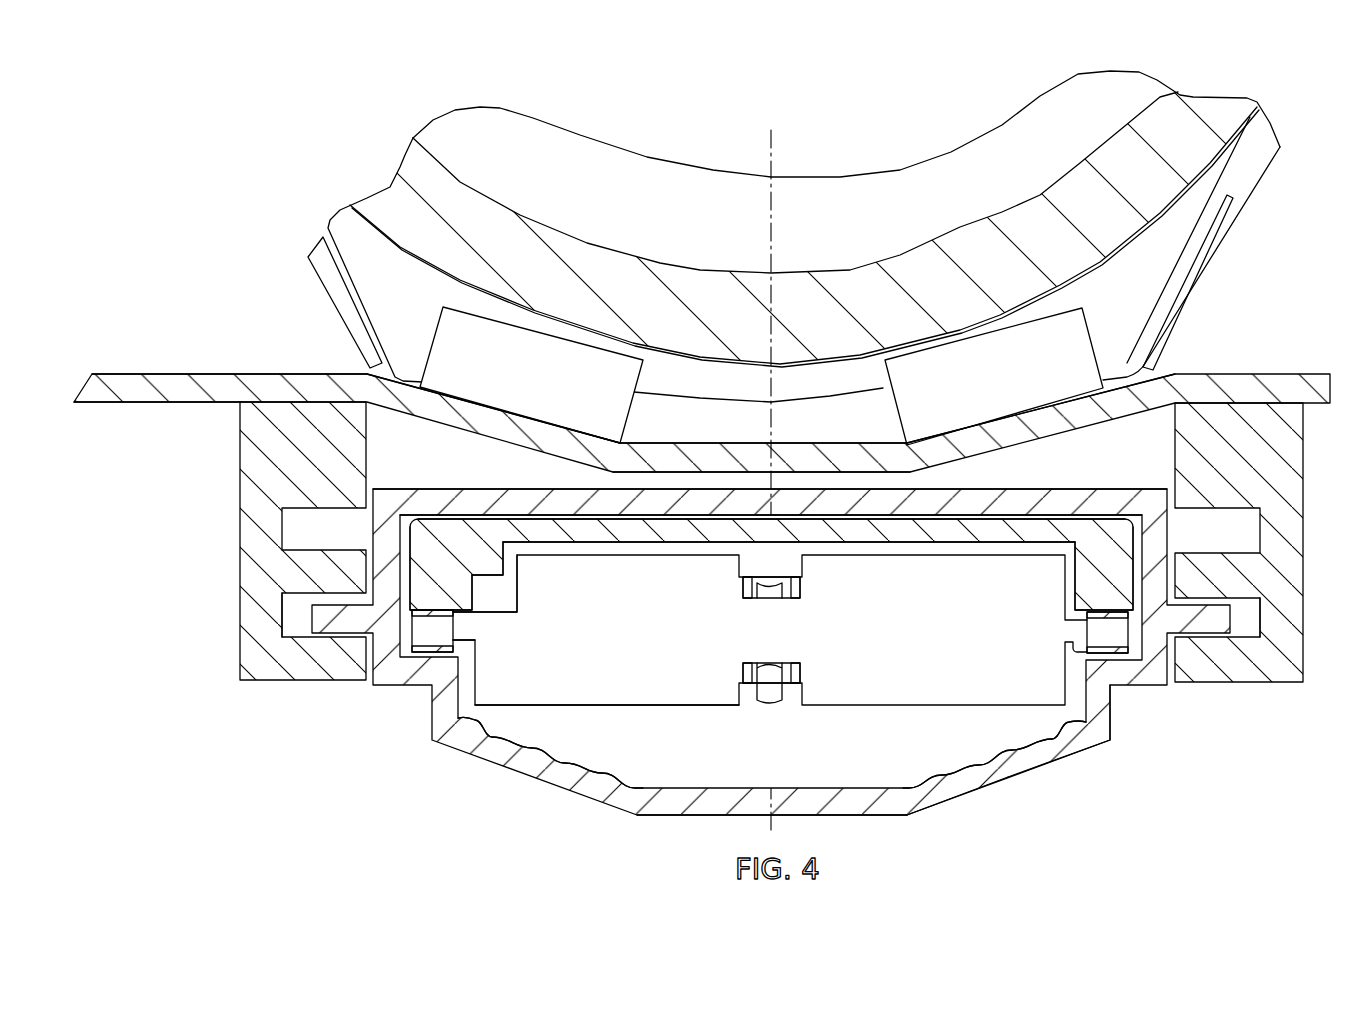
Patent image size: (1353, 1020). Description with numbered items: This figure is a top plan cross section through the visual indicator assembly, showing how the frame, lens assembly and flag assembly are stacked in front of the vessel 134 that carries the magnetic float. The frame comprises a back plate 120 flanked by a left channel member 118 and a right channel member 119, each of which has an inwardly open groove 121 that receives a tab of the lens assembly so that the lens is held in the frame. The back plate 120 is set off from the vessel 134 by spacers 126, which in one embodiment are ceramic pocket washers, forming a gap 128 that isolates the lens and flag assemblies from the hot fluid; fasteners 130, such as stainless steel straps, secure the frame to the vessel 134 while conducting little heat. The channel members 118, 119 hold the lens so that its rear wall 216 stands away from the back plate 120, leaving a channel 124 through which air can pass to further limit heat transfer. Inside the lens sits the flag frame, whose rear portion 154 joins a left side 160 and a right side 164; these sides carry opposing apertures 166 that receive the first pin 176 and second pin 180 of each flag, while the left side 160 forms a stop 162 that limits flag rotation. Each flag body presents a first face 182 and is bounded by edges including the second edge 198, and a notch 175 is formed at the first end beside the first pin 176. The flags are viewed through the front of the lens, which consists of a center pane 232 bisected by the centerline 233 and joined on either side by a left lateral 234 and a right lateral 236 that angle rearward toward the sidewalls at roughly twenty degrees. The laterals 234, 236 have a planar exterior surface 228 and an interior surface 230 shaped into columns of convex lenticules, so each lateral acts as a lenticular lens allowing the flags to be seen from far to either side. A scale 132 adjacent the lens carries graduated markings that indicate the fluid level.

The left channel member 118 is at (248, 447).
The right channel member 119 is at (1187, 460).
The back plate 120 is at (707, 453).
The groove 121 is at (283, 617).
The channel 124 is at (840, 482).
The spacer 126 is at (1025, 357).
The gap 128 is at (866, 417).
The fastener 130 is at (330, 293).
The scale 132 is at (132, 407).
The vessel 134 is at (523, 250).
The rear portion 154 is at (948, 527).
The left side 160 is at (438, 533).
The stop 162 is at (483, 550).
The right side 164 is at (1098, 593).
The aperture 166 is at (465, 650).
The notch 175 is at (517, 612).
The first pin 176 is at (430, 635).
The second pin 180 is at (1110, 628).
The first face 182 is at (528, 692).
The second edge 198 is at (602, 707).
The rear wall 216 is at (930, 503).
The exterior surface 228 is at (940, 802).
The interior surface 230 is at (980, 757).
The center pane 232 is at (687, 817).
The centerline 233 is at (770, 755).
The left lateral 234 is at (452, 740).
The right lateral 236 is at (1008, 775).